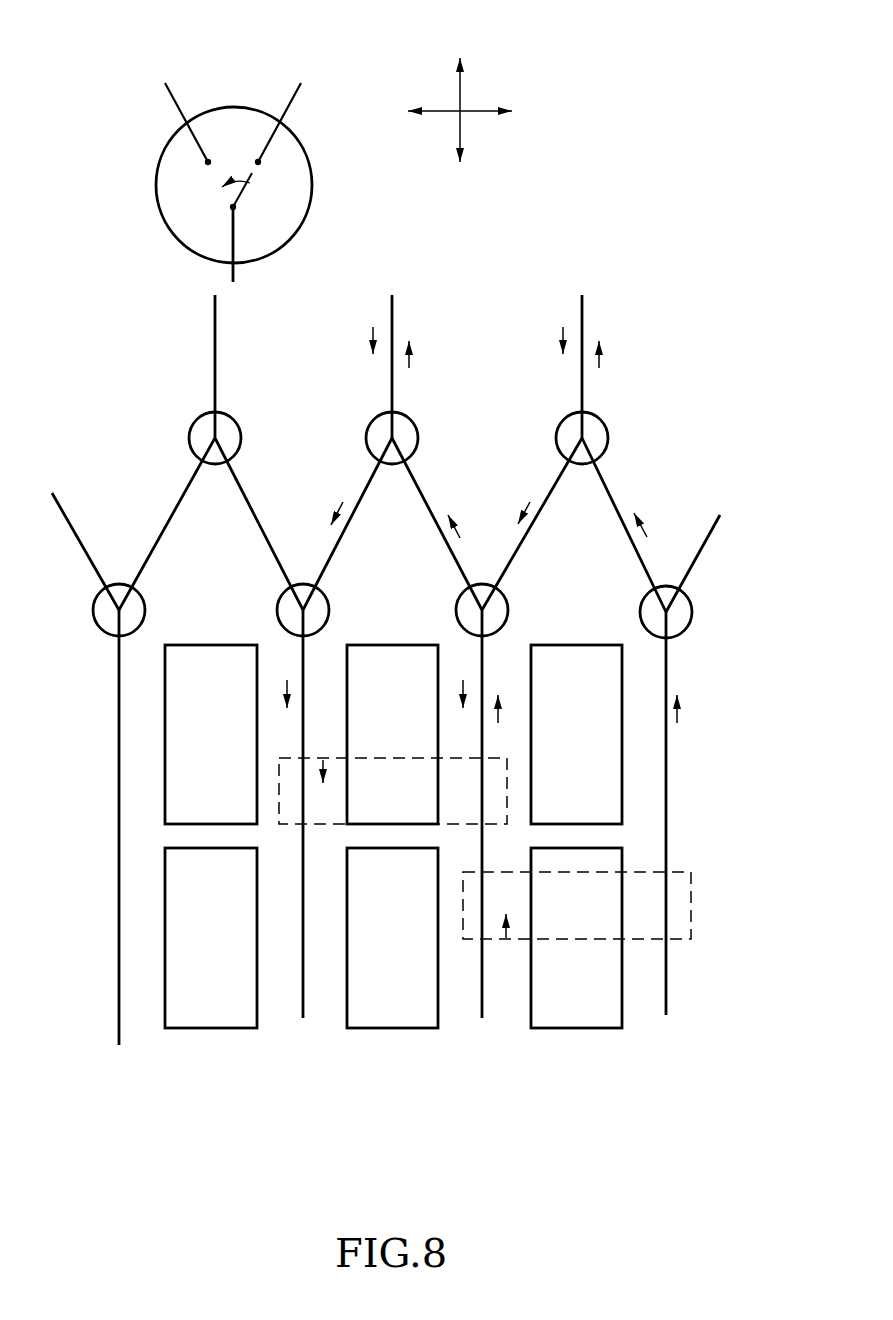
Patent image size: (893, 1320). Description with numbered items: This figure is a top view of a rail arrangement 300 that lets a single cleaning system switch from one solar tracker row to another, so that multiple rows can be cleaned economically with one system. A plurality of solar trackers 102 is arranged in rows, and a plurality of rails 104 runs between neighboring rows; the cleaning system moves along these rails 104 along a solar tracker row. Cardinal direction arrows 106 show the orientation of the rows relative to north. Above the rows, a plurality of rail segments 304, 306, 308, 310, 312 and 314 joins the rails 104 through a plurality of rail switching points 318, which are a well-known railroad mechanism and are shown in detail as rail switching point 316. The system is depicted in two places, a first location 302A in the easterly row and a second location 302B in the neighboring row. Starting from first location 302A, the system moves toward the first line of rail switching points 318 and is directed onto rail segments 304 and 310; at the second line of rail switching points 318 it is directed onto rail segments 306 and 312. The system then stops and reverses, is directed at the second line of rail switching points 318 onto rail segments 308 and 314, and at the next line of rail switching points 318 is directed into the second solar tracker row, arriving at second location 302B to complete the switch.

The rail arrangement 300 is at (148, 1120).
The first location 302A is at (680, 913).
The second location 302B is at (318, 815).
The rail segment 304 is at (610, 492).
The rail segment 306 is at (586, 388).
The rail segment 308 is at (548, 500).
The rail segment 310 is at (417, 483).
The rail segment 312 is at (395, 388).
The rail segment 314 is at (353, 518).
The rail switching point 316 is at (158, 162).
The rail switching points 318 is at (192, 430).
The solar trackers 102 is at (218, 1002).
The rails 104 is at (119, 822).
The cardinal direction arrows 106 is at (492, 74).